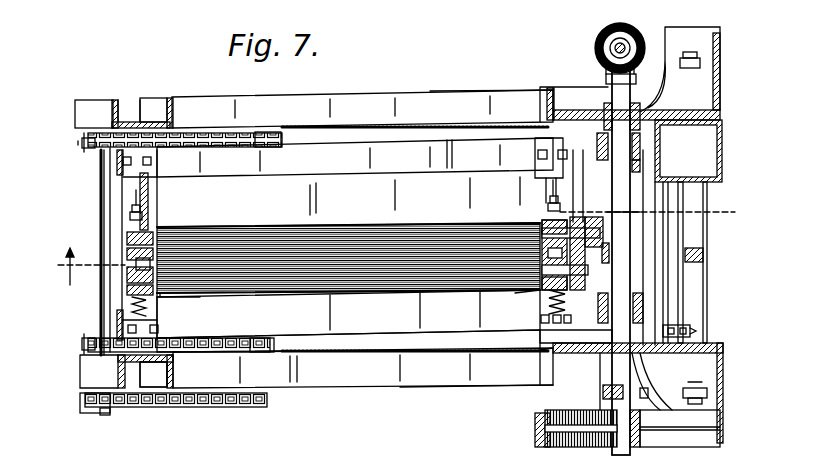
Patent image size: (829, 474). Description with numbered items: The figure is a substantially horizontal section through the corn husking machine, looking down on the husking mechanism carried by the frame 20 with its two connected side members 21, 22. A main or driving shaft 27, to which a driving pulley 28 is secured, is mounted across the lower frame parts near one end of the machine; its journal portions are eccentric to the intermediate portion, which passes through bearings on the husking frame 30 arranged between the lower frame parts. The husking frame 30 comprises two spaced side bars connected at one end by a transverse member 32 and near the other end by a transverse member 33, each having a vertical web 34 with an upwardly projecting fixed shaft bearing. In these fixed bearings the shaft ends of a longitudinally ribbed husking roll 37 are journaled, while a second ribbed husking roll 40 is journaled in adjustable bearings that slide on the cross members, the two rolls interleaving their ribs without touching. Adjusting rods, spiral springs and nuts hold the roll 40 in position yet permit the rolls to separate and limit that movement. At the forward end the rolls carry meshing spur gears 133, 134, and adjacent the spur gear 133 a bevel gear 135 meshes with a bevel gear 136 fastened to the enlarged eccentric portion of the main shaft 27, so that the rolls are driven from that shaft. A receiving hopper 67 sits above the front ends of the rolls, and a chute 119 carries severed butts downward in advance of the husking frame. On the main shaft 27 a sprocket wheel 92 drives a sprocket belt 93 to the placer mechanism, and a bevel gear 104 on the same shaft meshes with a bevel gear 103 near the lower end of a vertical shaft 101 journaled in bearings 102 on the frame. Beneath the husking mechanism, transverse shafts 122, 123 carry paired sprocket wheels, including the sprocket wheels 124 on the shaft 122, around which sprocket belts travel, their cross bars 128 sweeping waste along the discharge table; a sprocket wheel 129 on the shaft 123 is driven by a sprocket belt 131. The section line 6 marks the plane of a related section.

The section line 6 is at (397, 242).
The frame 20 is at (462, 92).
The side member 21 is at (340, 99).
The side member 22 is at (360, 384).
The main or driving shaft 27 is at (612, 192).
The driving pulley 28 is at (687, 437).
The husking frame 30 is at (355, 157).
The transverse member 32 is at (153, 200).
The transverse member 33 is at (547, 194).
The vertical web 34 is at (547, 190).
The husking roll 37 is at (405, 228).
The second husking roll 40 is at (303, 289).
The receiving hopper 67 is at (455, 154).
The sprocket wheel 92 is at (607, 400).
The sprocket belt 93 is at (602, 395).
The shaft 101 is at (613, 50).
The bearings 102 is at (667, 93).
The bevel gear 103 is at (597, 38).
The bevel gear 104 is at (547, 81).
The chute 119 is at (712, 162).
The transverse shaft 122 is at (675, 297).
The transverse shaft 123 is at (71, 252).
The sprocket wheels 124 is at (710, 331).
The cross bars 128 is at (250, 354).
The sprocket wheel 129 is at (85, 408).
The sprocket belt 131 is at (212, 407).
The spur gear 133 is at (614, 212).
The spur gear 134 is at (590, 277).
The bevel gear 135 is at (590, 218).
The bevel gear 136 is at (650, 250).